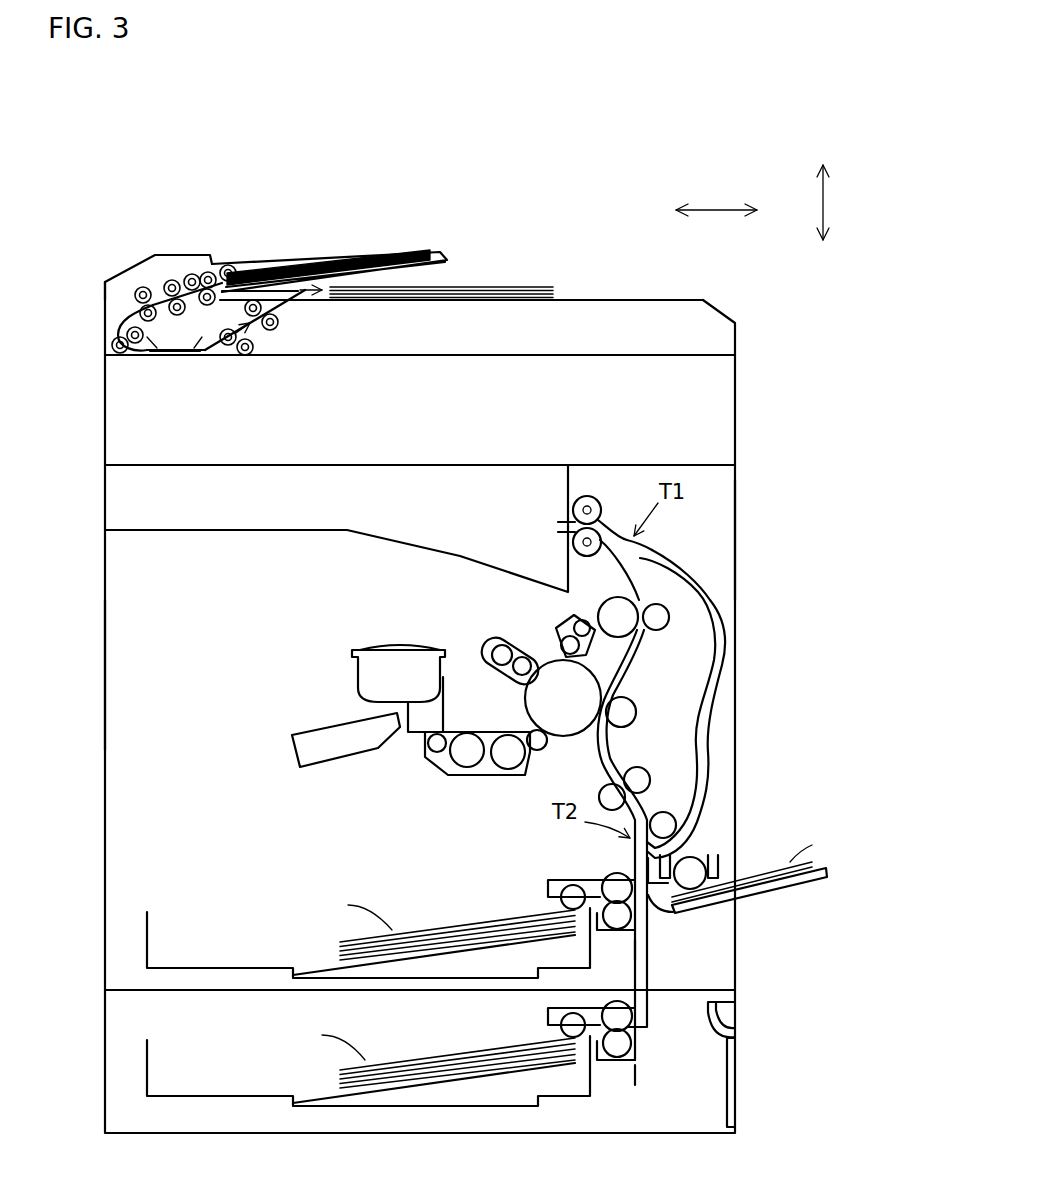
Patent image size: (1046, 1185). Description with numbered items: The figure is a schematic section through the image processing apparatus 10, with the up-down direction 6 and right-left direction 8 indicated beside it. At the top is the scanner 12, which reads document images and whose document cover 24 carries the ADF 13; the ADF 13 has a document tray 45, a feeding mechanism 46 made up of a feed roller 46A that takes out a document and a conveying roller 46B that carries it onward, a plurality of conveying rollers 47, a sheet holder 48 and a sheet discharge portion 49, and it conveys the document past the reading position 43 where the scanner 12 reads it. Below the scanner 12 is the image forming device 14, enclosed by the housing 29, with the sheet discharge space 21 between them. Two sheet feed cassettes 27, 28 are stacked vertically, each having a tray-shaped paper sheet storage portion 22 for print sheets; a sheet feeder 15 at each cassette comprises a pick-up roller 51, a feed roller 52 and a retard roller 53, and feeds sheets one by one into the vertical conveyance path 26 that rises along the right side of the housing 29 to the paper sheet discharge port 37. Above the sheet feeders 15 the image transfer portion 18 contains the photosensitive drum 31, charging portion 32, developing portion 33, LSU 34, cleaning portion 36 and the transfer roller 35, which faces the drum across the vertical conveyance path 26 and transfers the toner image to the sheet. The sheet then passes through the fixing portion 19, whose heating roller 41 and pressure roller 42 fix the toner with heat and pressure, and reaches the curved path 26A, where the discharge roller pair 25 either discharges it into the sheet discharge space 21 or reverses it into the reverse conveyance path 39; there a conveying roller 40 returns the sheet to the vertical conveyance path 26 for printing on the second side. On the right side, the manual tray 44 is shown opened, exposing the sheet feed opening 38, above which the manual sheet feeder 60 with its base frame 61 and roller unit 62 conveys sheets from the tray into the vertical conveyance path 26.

The up-down direction 6 is at (826, 205).
The right-left direction 8 is at (714, 208).
The image processing apparatus 10 is at (120, 208).
The scanner 12 is at (737, 385).
The ADF 13 is at (224, 243).
The image forming device 14 is at (737, 527).
The sheet feeder 15 is at (627, 942).
The image transfer portion 18 is at (471, 700).
The fixing portion 19 is at (679, 611).
The sheet discharge space 21 is at (272, 507).
The paper sheet storage portion 22 is at (143, 955).
The document cover 24 is at (582, 298).
The discharge roller pair 25 is at (582, 492).
The vertical conveyance path 26 is at (598, 757).
The curved path 26A is at (612, 515).
The sheet feed cassette 27 is at (130, 915).
The sheet feed cassette 28 is at (130, 1045).
The housing 29 is at (105, 672).
The photosensitive drum 31 is at (522, 696).
The charging portion 32 is at (498, 640).
The developing portion 33 is at (482, 778).
The LSU 34 is at (330, 725).
The transfer roller 35 is at (633, 708).
The cleaning portion 36 is at (558, 625).
The paper sheet discharge port 37 is at (550, 524).
The sheet feed opening 38 is at (657, 900).
The reverse conveyance path 39 is at (720, 728).
The conveying roller 40 is at (666, 812).
The heating roller 41 is at (612, 600).
The pressure roller 42 is at (668, 628).
The reading position 43 is at (177, 362).
The manual tray 44 is at (768, 895).
The document tray 45 is at (365, 250).
The feeding mechanism 46 is at (190, 272).
The feed roller 46A is at (232, 266).
The conveying roller 46B is at (208, 270).
The conveying rollers 47 is at (165, 281).
The sheet holder 48 is at (175, 349).
The sheet discharge portion 49 is at (495, 302).
The pick-up roller 51 is at (548, 898).
The feed roller 52 is at (612, 874).
The retard roller 53 is at (615, 935).
The manual sheet feeder 60 is at (734, 823).
The base frame 61 is at (722, 868).
The roller unit 62 is at (693, 855).